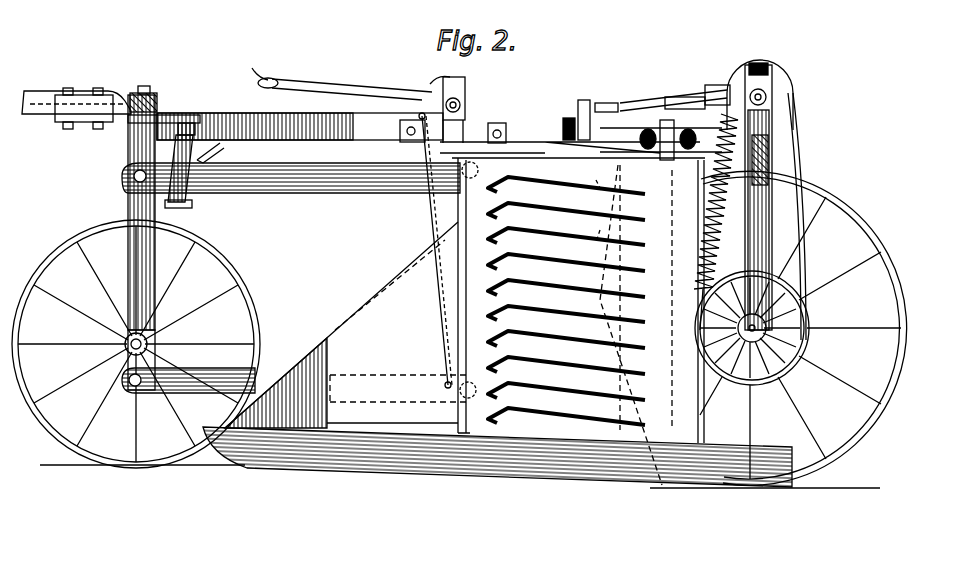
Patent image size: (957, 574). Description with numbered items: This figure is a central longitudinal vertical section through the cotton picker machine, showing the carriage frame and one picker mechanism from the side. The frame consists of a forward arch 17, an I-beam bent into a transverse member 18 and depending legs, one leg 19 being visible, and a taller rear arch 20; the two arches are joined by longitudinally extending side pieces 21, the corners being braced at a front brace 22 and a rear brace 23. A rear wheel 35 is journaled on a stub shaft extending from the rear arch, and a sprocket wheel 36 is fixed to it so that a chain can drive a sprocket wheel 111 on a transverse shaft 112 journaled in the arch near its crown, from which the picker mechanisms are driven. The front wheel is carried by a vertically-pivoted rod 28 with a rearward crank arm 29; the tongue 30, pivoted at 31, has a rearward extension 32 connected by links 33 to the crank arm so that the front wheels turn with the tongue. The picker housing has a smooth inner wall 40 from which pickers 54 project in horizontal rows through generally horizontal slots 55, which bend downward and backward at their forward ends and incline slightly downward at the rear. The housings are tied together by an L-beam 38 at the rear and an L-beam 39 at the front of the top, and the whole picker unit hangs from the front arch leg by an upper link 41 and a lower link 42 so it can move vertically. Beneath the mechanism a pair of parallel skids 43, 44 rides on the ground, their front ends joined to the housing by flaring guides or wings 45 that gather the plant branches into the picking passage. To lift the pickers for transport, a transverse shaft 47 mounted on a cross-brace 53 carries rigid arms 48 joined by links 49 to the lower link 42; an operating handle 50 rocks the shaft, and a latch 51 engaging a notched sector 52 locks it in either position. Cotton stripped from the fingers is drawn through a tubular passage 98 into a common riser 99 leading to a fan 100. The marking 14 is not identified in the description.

The tongue 30 is at (58, 92).
The pivot 31 is at (147, 86).
The transverse member 18 is at (160, 95).
The rearward extension 32 is at (170, 113).
The side pieces 21 is at (232, 113).
The links 33 is at (200, 130).
The brace 22 is at (225, 150).
The leg 19 is at (128, 207).
The crank arm 29 is at (195, 206).
The vertically-pivoted rod 28 is at (130, 246).
The forward arch 17 is at (150, 247).
The link 42 is at (262, 393).
The link 41 is at (372, 190).
The guides or wings 45 is at (347, 325).
The skid 43 is at (497, 457).
The link 49 is at (432, 232).
The rigid arm 48 is at (400, 126).
The operating handle 50 is at (255, 68).
The latch 51 is at (340, 80).
The notched sector 52 is at (462, 77).
The transverse shaft 47 is at (462, 88).
The cross-brace 53 is at (470, 100).
The skid 44 is at (442, 159).
The L-beam 39 is at (478, 170).
The slots 55 is at (545, 180).
The pickers 54 is at (618, 190).
The inner wall 40 is at (637, 297).
The L-beam 38 is at (662, 165).
The strut 14 is at (737, 158).
The riser 99 is at (703, 256).
The tubular passage 98 is at (640, 268).
The fan 100 is at (675, 103).
The rear arch 20 is at (795, 70).
The sprocket wheel 111 is at (800, 95).
The transverse shaft 112 is at (768, 100).
The brace 23 is at (758, 200).
The sprocket wheel 36 is at (812, 312).
The rear wheel 35 is at (905, 305).